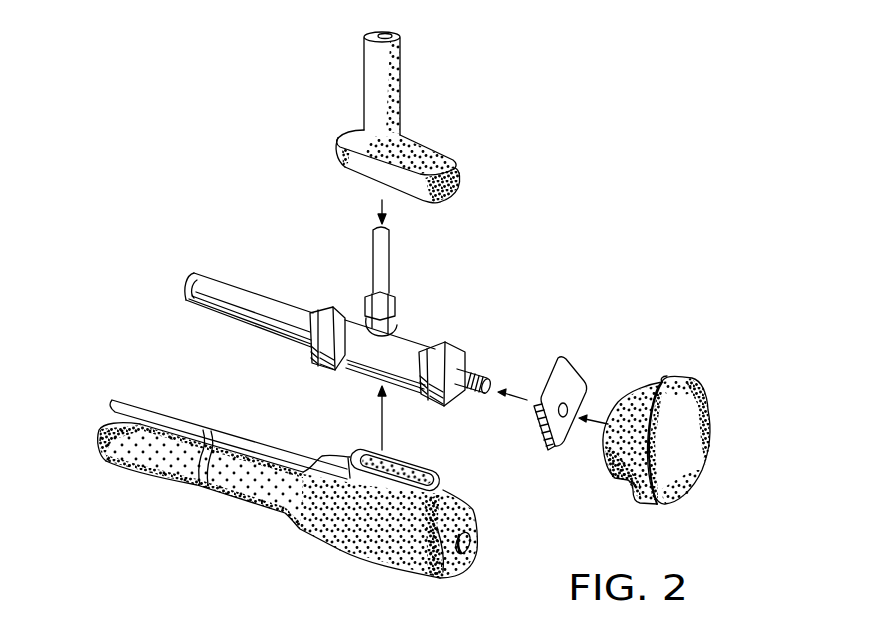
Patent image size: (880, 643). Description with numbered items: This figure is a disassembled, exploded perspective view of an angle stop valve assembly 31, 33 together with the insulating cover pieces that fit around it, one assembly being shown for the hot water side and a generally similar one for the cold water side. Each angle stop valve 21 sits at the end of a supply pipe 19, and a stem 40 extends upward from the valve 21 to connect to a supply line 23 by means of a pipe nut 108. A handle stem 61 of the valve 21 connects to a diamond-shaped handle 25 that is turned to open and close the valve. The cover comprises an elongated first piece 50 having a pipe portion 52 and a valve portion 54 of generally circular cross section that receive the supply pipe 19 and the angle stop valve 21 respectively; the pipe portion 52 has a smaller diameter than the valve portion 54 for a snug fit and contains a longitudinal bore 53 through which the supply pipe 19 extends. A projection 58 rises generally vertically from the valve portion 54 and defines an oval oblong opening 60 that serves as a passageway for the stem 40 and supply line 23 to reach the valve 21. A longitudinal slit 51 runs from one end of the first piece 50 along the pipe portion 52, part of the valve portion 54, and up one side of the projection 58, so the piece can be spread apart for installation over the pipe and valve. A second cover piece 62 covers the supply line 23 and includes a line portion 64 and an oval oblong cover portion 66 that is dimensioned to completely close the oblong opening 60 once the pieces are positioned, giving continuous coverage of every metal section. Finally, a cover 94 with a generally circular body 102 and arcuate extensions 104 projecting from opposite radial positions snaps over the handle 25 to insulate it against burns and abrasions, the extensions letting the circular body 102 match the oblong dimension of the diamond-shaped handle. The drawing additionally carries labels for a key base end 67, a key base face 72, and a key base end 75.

The second cover piece 62 is at (326, 92).
The line portion 64 is at (402, 72).
The oblong cover portion 66 is at (442, 148).
The key base end 67 is at (338, 138).
The key base face 72 is at (353, 168).
The key base end 75 is at (460, 190).
The angle stop valve assembly 31 is at (174, 264).
The angle stop valve assembly 33 is at (249, 291).
The supply pipe 19 is at (214, 277).
The supply line 23 is at (376, 254).
The stem 40 is at (372, 323).
The pipe nut 108 is at (397, 301).
The angle stop valve 21 is at (400, 335).
The handle stem 61 is at (478, 378).
The handle 25 is at (568, 364).
The cover 94 is at (709, 378).
The circular body 102 is at (690, 445).
The arcuate extensions 104 is at (700, 388).
The first piece 50 is at (219, 503).
The longitudinal slit 51 is at (140, 412).
The pipe portion 52 is at (150, 460).
The longitudinal bore 53 is at (107, 420).
The valve portion 54 is at (347, 543).
The projection 58 is at (443, 486).
The oblong opening 60 is at (403, 463).